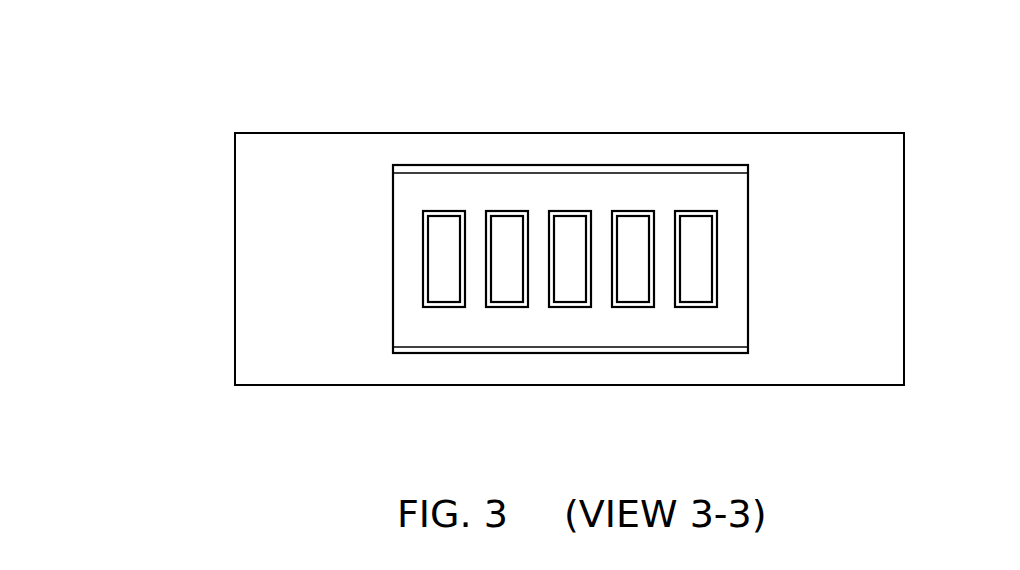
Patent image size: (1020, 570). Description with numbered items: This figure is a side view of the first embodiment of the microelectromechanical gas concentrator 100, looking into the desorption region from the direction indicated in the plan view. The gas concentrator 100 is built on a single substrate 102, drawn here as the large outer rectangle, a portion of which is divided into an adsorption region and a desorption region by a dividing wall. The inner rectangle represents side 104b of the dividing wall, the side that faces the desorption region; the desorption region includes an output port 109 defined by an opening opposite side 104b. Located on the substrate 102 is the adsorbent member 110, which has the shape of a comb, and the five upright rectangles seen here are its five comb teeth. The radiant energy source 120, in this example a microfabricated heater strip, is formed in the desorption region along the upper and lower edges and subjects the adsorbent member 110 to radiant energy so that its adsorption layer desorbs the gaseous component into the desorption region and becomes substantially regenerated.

The microelectromechanical gas concentrator 100 is at (172, 224).
The substrate 102 is at (311, 339).
The side of the dividing wall 104b is at (440, 187).
The output port 109 is at (635, 163).
The adsorbent member 110 is at (506, 283).
The radiant energy source 120 is at (538, 168).